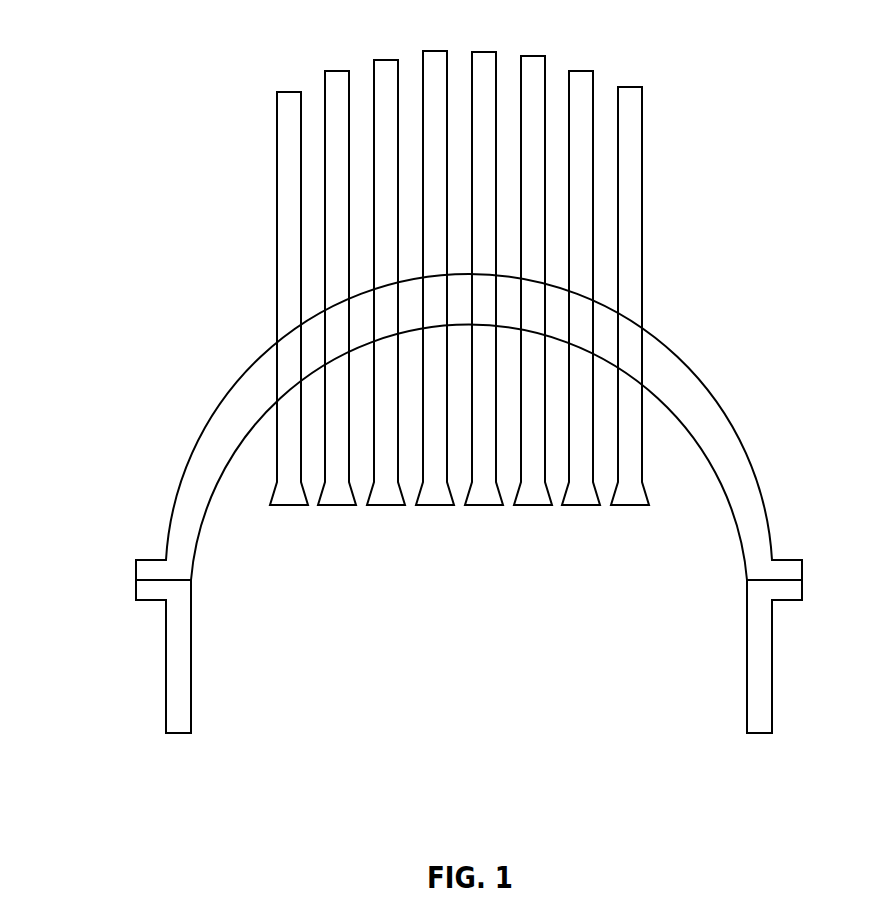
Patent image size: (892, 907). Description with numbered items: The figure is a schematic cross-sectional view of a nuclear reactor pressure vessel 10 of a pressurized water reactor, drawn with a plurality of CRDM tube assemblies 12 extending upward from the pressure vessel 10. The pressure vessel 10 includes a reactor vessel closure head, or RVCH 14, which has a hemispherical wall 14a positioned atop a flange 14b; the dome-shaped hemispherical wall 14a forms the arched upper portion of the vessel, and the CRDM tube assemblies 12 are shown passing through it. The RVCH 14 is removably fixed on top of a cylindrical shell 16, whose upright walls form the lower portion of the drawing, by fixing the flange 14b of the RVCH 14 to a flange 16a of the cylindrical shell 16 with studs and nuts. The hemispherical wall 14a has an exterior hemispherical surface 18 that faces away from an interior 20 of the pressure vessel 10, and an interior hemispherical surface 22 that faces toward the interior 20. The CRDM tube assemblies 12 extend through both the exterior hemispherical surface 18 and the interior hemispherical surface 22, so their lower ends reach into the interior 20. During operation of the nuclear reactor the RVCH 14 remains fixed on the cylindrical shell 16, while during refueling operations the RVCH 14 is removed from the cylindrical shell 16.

The nuclear reactor pressure vessel 10 is at (120, 82).
The CRDM tube assemblies 12 is at (283, 163).
The RVCH 14 is at (225, 355).
The hemispherical wall 14a is at (205, 452).
The flange 14b is at (153, 567).
The cylindrical shell 16 is at (177, 687).
The flange 16a is at (152, 592).
The exterior hemispherical surface 18 is at (677, 352).
The interior 20 is at (490, 608).
The interior hemispherical surface 22 is at (688, 405).